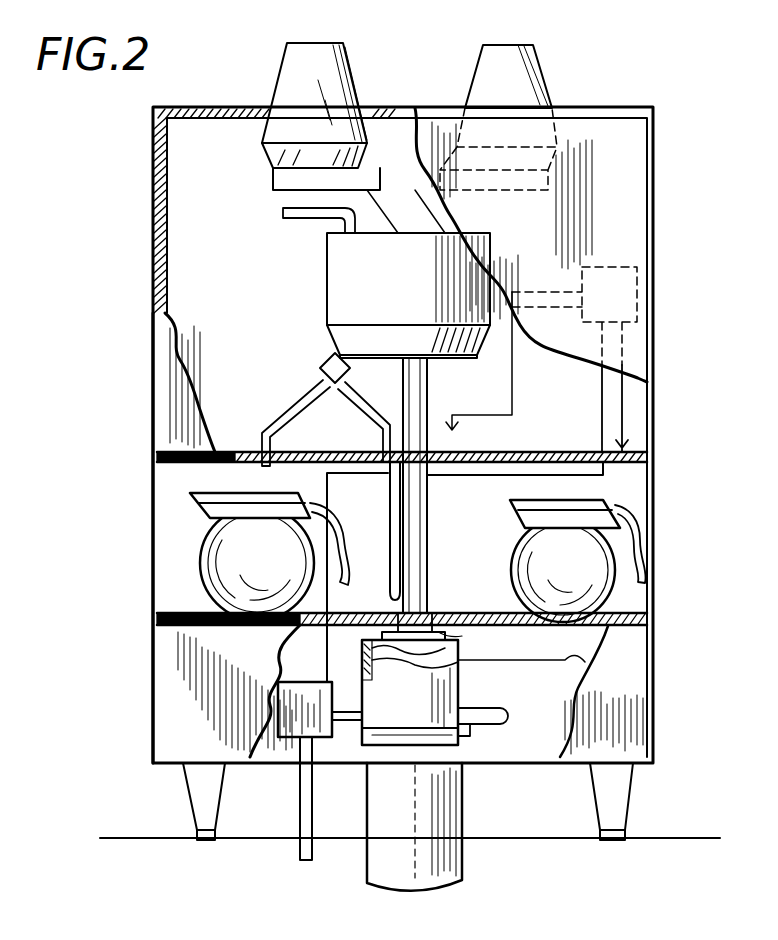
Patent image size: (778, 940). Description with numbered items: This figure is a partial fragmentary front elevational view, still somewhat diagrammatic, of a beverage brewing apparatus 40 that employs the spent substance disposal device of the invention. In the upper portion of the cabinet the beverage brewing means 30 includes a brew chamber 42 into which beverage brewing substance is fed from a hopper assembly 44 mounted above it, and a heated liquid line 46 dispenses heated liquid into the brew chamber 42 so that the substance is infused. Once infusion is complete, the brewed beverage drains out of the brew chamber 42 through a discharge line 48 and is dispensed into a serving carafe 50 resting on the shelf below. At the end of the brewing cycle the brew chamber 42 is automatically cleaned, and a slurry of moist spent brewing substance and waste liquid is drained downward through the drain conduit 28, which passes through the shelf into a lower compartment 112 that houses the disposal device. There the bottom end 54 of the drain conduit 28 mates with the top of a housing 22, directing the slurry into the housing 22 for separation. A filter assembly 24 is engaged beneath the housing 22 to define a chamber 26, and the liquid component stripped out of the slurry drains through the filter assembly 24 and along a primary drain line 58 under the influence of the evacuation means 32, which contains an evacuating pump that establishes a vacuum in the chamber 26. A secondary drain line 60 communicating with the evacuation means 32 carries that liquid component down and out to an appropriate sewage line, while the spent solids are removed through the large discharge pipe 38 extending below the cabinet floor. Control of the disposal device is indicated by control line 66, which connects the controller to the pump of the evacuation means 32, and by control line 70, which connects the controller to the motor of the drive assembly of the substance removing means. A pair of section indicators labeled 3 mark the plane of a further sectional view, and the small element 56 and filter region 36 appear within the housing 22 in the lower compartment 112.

The beverage brewing apparatus 40 is at (128, 152).
The hopper assembly 44 is at (276, 70).
The heated liquid line 46 is at (300, 215).
The brew chamber 42 is at (336, 300).
The beverage brewing means 30 is at (288, 334).
The discharge line 48 is at (298, 402).
The drain conduit 28 is at (428, 378).
The chamber 26 is at (370, 640).
The control line 66 is at (600, 395).
The control line 70 is at (652, 410).
The serving carafe 50 is at (222, 560).
The section view indicator 3 is at (527, 570).
The lower compartment 112 is at (290, 648).
The housing 22 is at (447, 676).
The bottom end 54 is at (448, 636).
The filter 36 is at (408, 732).
The primary drain line 58 is at (515, 716).
The connector 56 is at (462, 740).
The evacuation means 32 is at (278, 712).
The filter assembly 24 is at (370, 742).
The secondary drain line 60 is at (300, 830).
The waste pipe 38 is at (390, 845).